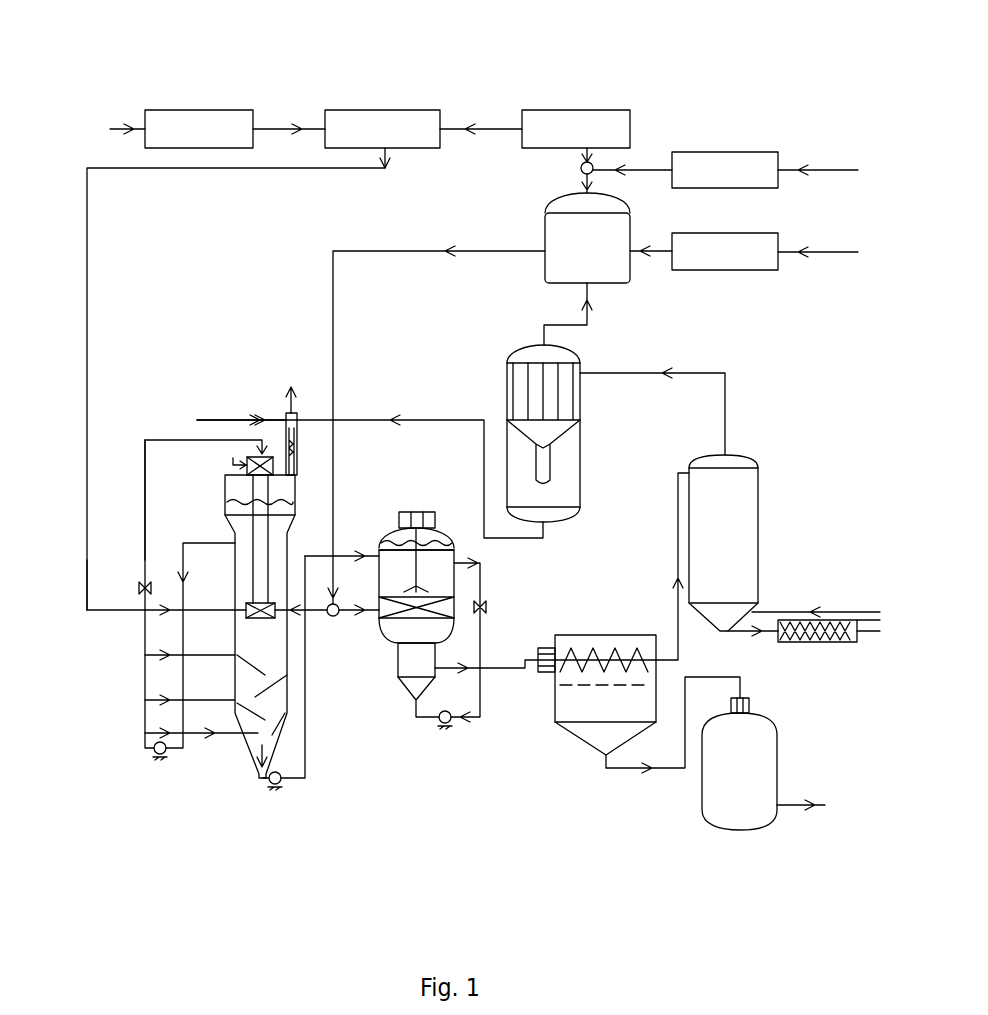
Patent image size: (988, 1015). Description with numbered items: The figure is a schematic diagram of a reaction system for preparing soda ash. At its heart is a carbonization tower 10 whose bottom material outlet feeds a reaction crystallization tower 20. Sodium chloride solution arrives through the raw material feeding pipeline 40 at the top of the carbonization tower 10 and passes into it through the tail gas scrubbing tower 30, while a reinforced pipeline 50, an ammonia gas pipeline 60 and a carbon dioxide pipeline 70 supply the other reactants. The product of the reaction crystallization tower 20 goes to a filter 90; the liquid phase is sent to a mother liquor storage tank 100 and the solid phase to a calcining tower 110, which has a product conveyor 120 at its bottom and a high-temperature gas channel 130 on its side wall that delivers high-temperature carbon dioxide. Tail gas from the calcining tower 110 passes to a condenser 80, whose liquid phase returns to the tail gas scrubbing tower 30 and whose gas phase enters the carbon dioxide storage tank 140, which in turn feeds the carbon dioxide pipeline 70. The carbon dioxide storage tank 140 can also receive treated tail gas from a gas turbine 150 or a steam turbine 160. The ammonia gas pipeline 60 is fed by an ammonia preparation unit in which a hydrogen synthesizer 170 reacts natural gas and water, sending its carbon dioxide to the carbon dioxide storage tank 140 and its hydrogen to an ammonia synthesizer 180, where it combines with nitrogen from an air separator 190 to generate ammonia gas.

The carbonization tower 10 is at (272, 653).
The reaction crystallization tower 20 is at (405, 628).
The tail gas scrubbing tower 30 is at (283, 417).
The raw material feeding pipeline 40 is at (240, 418).
The reinforced pipeline 50 is at (145, 510).
The ammonia gas pipeline 60 is at (83, 585).
The carbon dioxide pipeline 70 is at (333, 507).
The condenser 80 is at (570, 476).
The filter 90 is at (563, 708).
The mother liquor storage tank 100 is at (722, 787).
The calcining tower 110 is at (742, 541).
The product conveyor 120 is at (817, 642).
The high-temperature gas channel 130 is at (817, 612).
The carbon dioxide storage tank 140 is at (600, 268).
The gas turbine 150 is at (730, 258).
The steam turbine 160 is at (740, 178).
The hydrogen synthesizer 170 is at (583, 125).
The ammonia synthesizer 180 is at (400, 118).
The air separator 190 is at (218, 125).